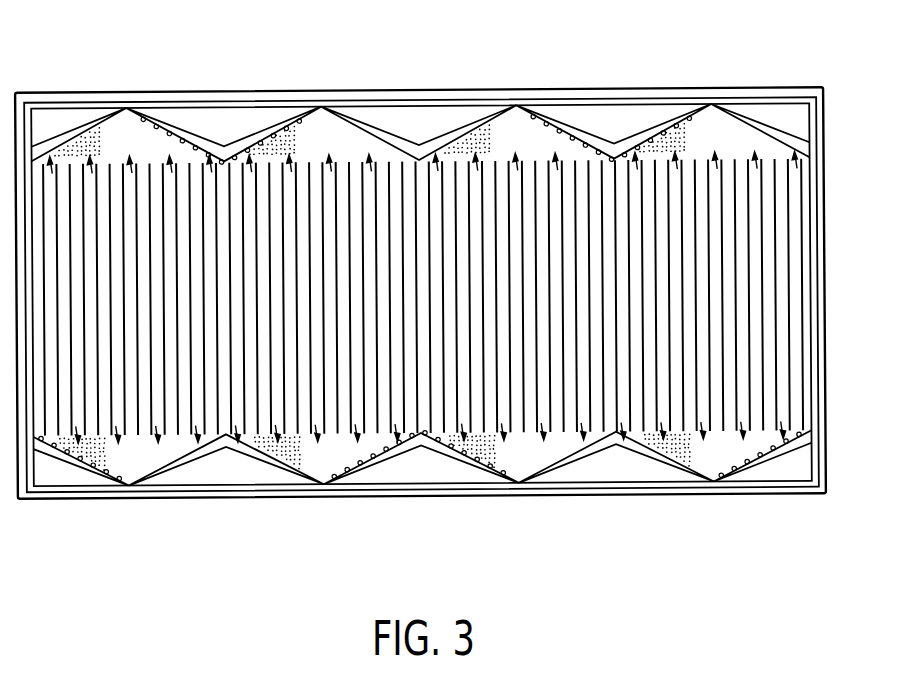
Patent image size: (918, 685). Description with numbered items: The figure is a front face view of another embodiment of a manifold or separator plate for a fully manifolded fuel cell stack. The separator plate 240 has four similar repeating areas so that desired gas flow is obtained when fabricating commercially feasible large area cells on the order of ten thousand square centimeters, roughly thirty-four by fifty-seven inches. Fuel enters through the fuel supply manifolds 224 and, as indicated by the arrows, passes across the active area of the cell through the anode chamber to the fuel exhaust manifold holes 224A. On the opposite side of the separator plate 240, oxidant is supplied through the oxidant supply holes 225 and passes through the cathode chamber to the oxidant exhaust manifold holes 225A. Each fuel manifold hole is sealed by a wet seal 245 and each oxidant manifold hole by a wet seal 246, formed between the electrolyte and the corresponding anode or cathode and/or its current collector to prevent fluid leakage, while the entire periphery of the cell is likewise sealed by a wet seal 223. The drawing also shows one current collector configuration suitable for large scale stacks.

The wet seal 223 is at (817, 250).
The separator plate 240 is at (132, 500).
The fuel supply manifolds 224 is at (68, 477).
The fuel exhaust manifold holes 224A is at (207, 115).
The oxidant supply holes 225 is at (230, 473).
The oxidant exhaust manifold holes 225A is at (57, 115).
The wet seal 245 is at (260, 125).
The wet seal 246 is at (372, 107).